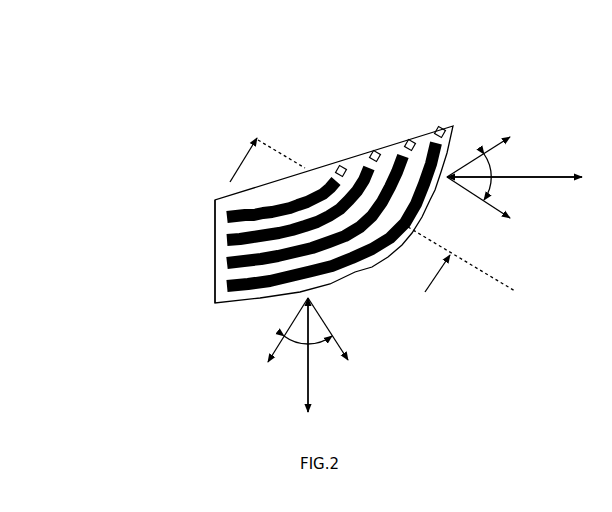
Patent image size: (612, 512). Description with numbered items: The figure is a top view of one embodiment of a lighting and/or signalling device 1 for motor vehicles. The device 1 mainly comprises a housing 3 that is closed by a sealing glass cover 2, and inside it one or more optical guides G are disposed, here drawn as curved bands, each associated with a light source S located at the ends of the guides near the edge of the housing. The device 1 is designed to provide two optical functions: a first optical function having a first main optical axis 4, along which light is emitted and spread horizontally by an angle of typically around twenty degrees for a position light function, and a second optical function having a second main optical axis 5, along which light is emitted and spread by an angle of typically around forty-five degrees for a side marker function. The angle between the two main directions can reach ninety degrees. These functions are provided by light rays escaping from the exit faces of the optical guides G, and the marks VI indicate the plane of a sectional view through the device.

The lighting and/or signalling device 1 is at (363, 128).
The sealing glass cover 2 is at (368, 271).
The housing 3 is at (219, 198).
The first main optical axis 4 is at (312, 387).
The second main optical axis 5 is at (537, 180).
The optical guides G is at (232, 210).
The light sources S is at (343, 165).
The section line VI is at (372, 215).